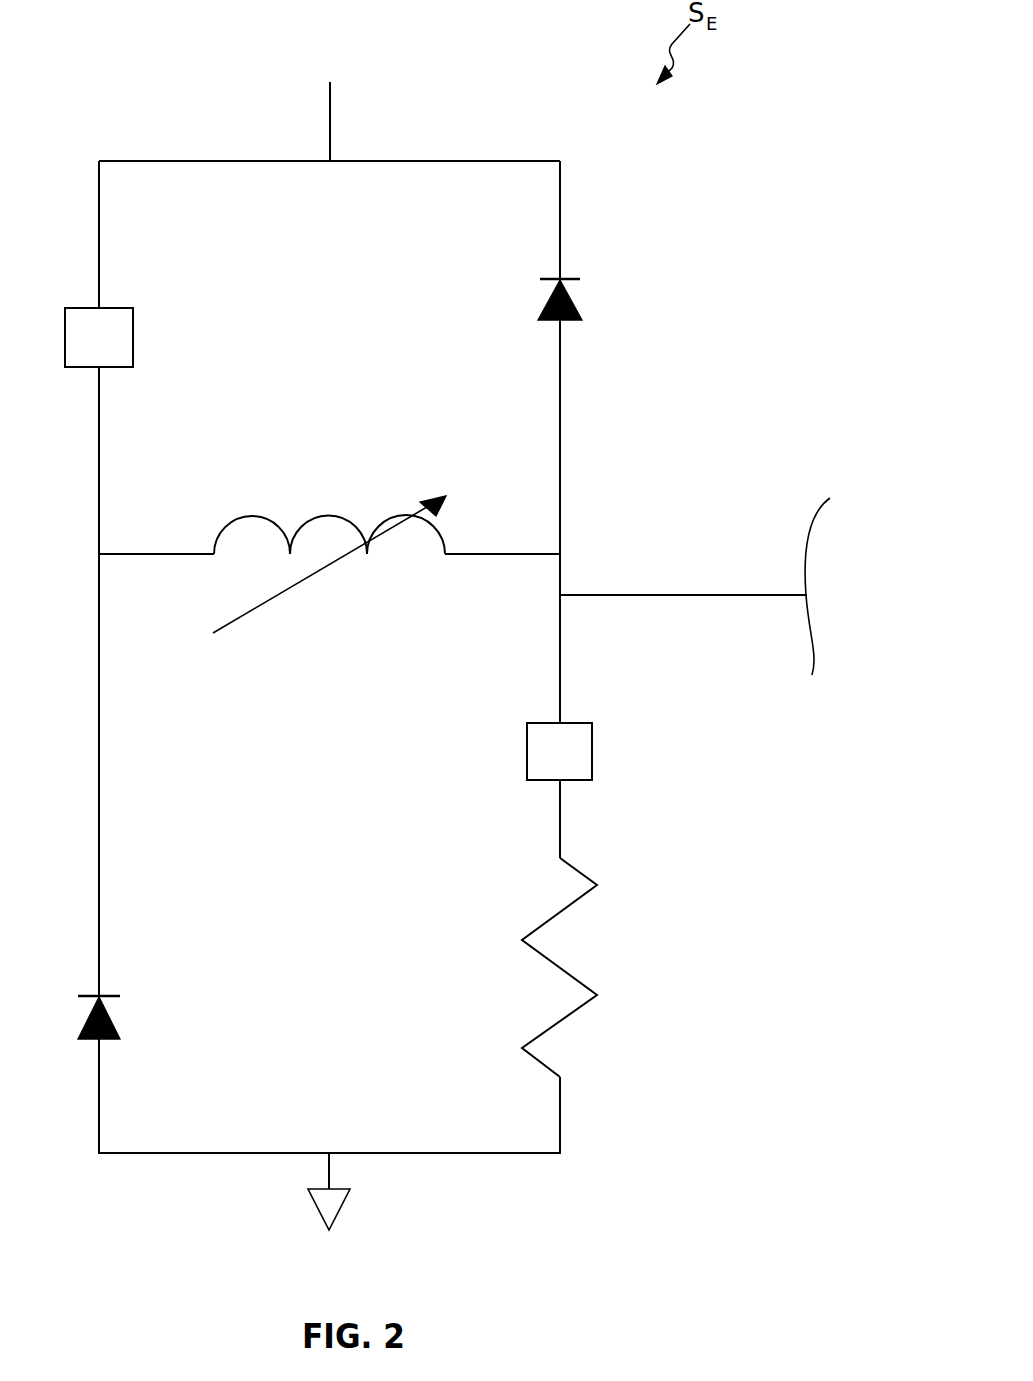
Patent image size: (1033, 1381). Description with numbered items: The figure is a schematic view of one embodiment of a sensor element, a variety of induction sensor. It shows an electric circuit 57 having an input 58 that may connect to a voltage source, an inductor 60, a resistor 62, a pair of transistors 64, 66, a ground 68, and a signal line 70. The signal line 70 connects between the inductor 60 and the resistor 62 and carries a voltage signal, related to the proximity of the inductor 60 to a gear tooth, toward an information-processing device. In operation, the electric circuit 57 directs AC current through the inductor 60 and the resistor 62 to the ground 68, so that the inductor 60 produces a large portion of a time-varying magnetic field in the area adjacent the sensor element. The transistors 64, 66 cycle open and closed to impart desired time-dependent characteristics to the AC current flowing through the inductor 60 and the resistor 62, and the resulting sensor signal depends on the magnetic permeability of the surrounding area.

The electric circuit 57 is at (138, 160).
The input 58 is at (330, 102).
The inductor 60 is at (328, 514).
The resistor 62 is at (560, 967).
The transistor 64 is at (99, 337).
The transistor 66 is at (559, 751).
The ground 68 is at (342, 1212).
The signal line 70 is at (711, 595).